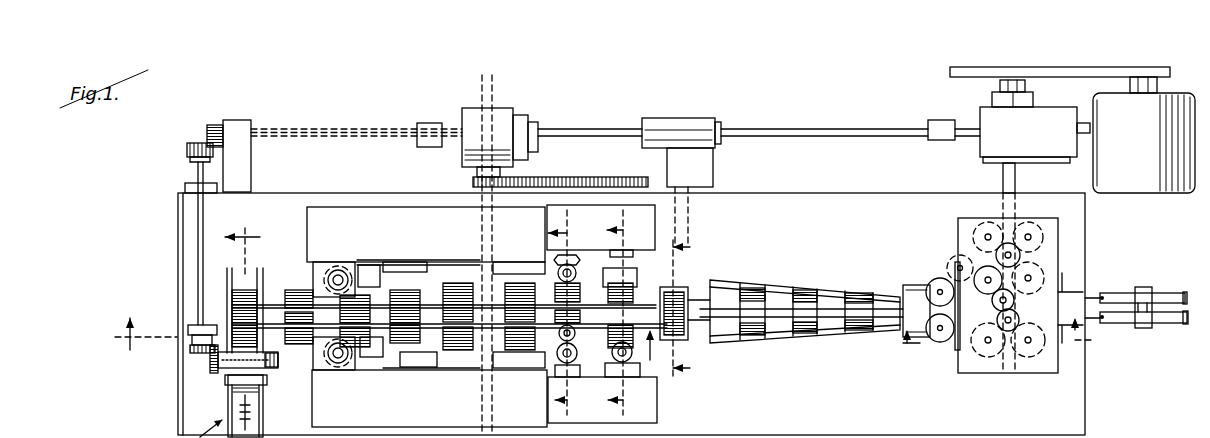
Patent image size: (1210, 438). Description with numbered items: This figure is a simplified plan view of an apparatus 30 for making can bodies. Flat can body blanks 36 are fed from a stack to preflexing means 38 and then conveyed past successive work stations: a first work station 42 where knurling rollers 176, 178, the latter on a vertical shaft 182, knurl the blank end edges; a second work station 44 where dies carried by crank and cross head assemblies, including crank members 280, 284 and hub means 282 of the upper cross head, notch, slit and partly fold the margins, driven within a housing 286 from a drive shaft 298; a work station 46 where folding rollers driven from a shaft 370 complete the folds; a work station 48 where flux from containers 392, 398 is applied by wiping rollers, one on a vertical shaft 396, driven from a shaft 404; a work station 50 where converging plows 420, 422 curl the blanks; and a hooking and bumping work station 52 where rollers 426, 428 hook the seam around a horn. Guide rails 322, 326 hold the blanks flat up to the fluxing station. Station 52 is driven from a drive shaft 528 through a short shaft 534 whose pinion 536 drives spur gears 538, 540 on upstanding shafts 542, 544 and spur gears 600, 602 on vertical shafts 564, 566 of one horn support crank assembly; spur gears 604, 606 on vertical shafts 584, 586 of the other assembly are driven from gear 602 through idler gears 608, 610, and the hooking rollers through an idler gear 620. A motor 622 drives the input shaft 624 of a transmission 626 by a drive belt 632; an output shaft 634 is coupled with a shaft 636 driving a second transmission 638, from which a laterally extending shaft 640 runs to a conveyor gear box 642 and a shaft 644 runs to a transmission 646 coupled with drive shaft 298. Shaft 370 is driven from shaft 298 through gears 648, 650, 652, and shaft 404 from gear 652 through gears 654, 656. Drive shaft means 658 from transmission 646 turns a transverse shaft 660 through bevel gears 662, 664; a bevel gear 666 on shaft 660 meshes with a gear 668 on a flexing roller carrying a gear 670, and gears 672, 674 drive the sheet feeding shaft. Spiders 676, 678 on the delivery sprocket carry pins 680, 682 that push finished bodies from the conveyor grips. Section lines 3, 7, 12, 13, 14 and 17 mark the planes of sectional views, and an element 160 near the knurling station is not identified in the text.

The section line 3 is at (242, 246).
The section line 7 is at (138, 334).
The section line 12 is at (585, 313).
The section line 13 is at (640, 312).
The section line 14 is at (697, 307).
The section line 17 is at (985, 346).
The apparatus 30 is at (735, 105).
The flat can body blanks 36 is at (712, 270).
The preflexing means 38 is at (268, 333).
The first work station 42 is at (317, 220).
The second work station 44 is at (392, 218).
The work station 46 is at (582, 218).
The work station 48 is at (655, 237).
The work station 50 is at (836, 270).
The side seam hooking and bumping work station 52 is at (928, 252).
The bearing 160 is at (332, 277).
The knurling roller 176 is at (340, 268).
The knurling roller 178 is at (353, 398).
The vertical rotatable shaft 182 is at (340, 367).
The crank member 280 is at (397, 373).
The hub means 282 is at (503, 352).
The crank member 284 is at (528, 360).
The housing 286 is at (427, 205).
The drive shaft 298 is at (480, 225).
The guide rail 322 is at (272, 317).
The guide rail 326 is at (293, 312).
The shaft 370 is at (546, 200).
The container 392 is at (637, 272).
The vertically disposed shaft 396 is at (617, 353).
The container 398 is at (640, 368).
The shaft 404 is at (658, 195).
The converging guide or plow 420 is at (777, 290).
The converging guide or plow 422 is at (782, 333).
The roller 426 is at (930, 280).
The roller 428 is at (930, 347).
The drive shaft 528 is at (1015, 177).
The short shaft 534 is at (1040, 252).
The pinion 536 is at (1015, 262).
The spur gear 538 is at (1037, 227).
The spur gear 540 is at (988, 220).
The upstanding shaft 542 is at (1035, 228).
The upstanding shaft 544 is at (985, 235).
The vertical shaft 564 is at (1048, 278).
The vertical shaft 566 is at (945, 250).
The vertical shaft 584 is at (1040, 360).
The vertical shaft 586 is at (977, 357).
The spur gear 600 is at (1040, 265).
The spur gear 602 is at (932, 345).
The spur gear 604 is at (1028, 357).
The spur gear 606 is at (988, 357).
The idler gear 608 is at (1012, 318).
The idler gear 610 is at (1008, 357).
The idler gear 620 is at (935, 255).
The motor 622 is at (1113, 117).
The input shaft 624 is at (1000, 90).
The transmission 626 is at (982, 112).
The drive belt 632 is at (1135, 70).
The output shaft 634 is at (968, 136).
The shaft 636 is at (743, 127).
The second transmission 638 is at (677, 118).
The laterally extending shaft 640 is at (683, 215).
The gear box 642 is at (735, 262).
The shaft 644 is at (560, 130).
The transmission 646 is at (472, 110).
The gear 648 is at (503, 245).
The gear 650 is at (560, 199).
The gear 652 is at (570, 197).
The gear 654 is at (590, 197).
The gear 656 is at (640, 180).
The drive shaft means 658 is at (285, 128).
The transversely disposed shaft 660 is at (195, 228).
The bevel gear 662 is at (215, 125).
The bevel gear 664 is at (197, 141).
The bevel gear 666 is at (200, 353).
The gear 668 is at (210, 370).
The gear 670 is at (270, 380).
The gear 672 is at (227, 373).
The gear 674 is at (218, 323).
The spider 676 is at (1163, 285).
The spider 678 is at (1153, 328).
The pins 680 is at (1183, 293).
The pins 682 is at (1185, 328).